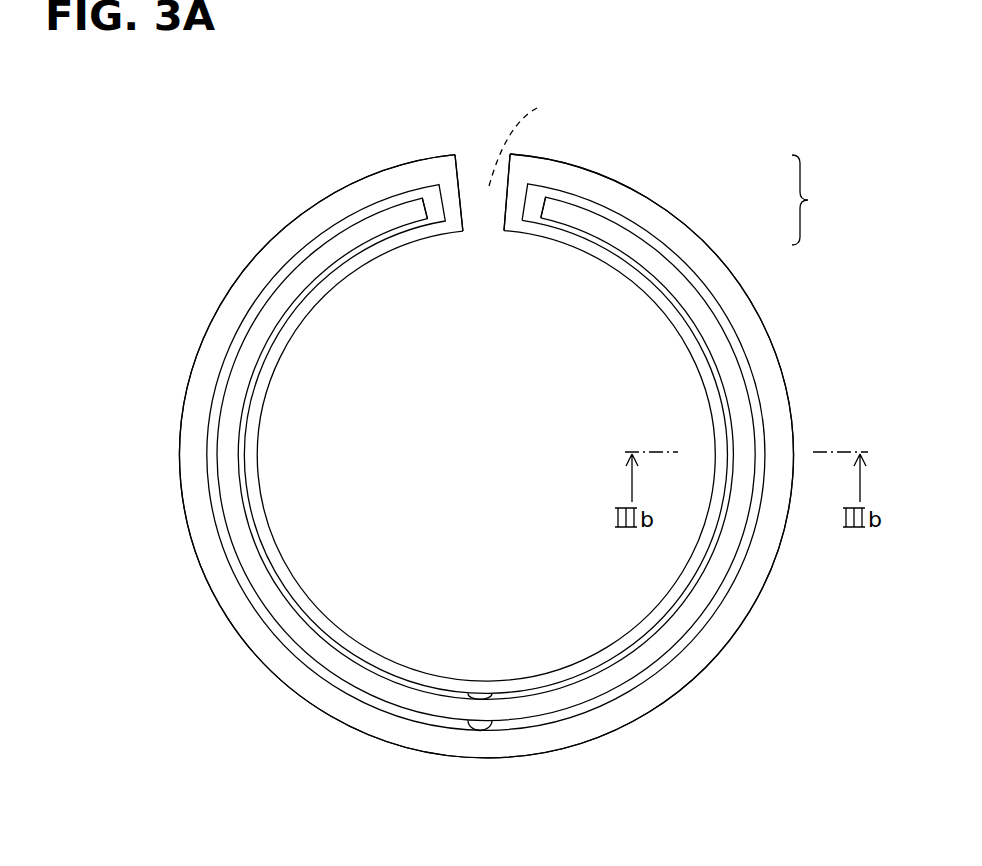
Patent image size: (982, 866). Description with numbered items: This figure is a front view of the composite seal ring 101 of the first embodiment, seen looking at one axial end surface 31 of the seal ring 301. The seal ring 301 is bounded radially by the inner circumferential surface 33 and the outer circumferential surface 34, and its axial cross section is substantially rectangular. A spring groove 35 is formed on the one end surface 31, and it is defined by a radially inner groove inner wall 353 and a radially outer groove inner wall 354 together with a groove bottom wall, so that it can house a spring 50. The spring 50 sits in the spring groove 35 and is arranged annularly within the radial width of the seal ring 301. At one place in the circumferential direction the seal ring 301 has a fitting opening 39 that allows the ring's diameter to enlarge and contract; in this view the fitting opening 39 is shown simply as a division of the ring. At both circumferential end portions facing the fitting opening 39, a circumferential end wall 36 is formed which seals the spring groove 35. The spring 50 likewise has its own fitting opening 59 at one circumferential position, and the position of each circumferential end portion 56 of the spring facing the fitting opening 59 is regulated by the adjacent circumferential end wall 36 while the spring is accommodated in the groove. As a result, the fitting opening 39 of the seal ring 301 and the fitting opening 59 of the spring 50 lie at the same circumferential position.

The one end surface 31 is at (243, 623).
The inner circumferential surface 33 is at (258, 460).
The outer circumferential surface 34 is at (179, 460).
The spring groove 35 is at (725, 582).
The circumferential end wall 36 is at (452, 194).
The fitting opening 39 is at (480, 175).
The spring 50 is at (702, 318).
The circumferential end portion 56 is at (407, 207).
The fitting opening 59 is at (527, 138).
The composite seal ring 101 is at (823, 200).
The seal ring 301 is at (715, 211).
The radially inner groove inner wall 353 is at (490, 697).
The radially outer groove inner wall 354 is at (490, 727).